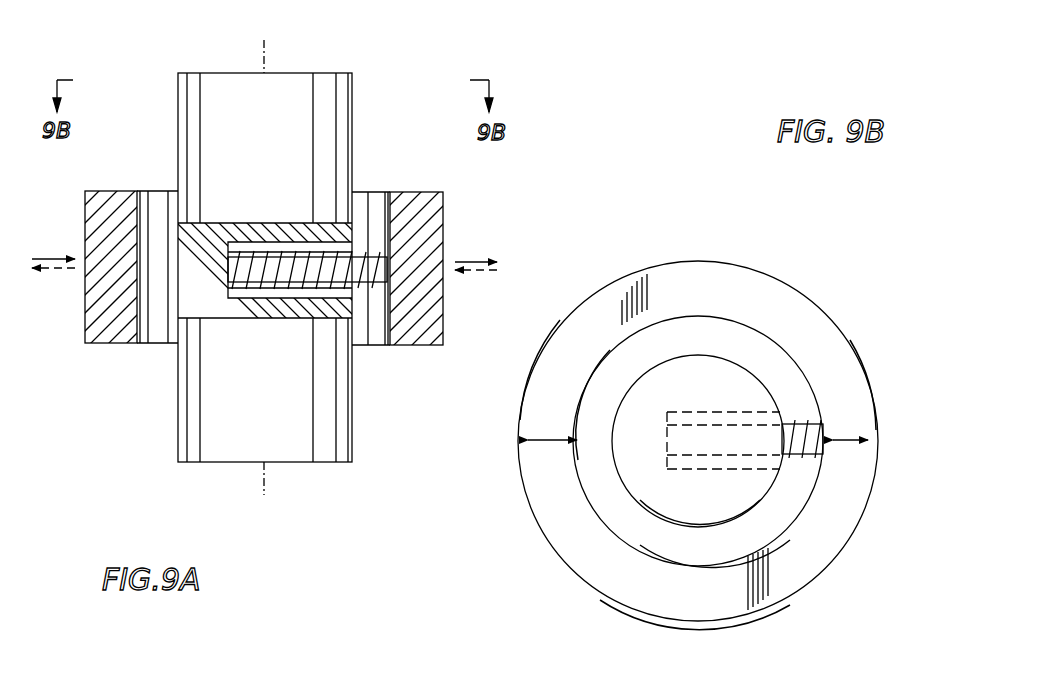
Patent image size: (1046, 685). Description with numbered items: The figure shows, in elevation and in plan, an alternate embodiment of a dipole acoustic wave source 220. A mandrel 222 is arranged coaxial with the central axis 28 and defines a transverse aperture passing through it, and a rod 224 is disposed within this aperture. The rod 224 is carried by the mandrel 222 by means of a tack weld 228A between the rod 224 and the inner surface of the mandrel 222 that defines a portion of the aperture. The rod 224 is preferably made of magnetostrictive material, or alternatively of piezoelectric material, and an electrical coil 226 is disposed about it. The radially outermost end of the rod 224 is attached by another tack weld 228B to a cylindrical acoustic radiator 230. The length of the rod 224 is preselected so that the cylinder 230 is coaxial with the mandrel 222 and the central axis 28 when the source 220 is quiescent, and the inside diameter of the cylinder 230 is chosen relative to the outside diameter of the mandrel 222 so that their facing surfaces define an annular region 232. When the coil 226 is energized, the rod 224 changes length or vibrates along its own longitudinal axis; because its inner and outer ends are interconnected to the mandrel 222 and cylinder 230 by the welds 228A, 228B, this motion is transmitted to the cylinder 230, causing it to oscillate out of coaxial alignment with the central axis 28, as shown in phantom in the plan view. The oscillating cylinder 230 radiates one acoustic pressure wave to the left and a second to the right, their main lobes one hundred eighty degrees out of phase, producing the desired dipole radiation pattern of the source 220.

In FIG. 9A, the central axis 28 is at (264, 40).
In FIG. 9A, the dipole acoustic wave source 220 is at (122, 416).
In FIG. 9B, the dipole acoustic wave source 220 is at (850, 263).
In FIG. 9A, the mandrel 222 is at (342, 78).
In FIG. 9B, the mandrel 222 is at (640, 497).
In FIG. 9A, the rod 224 is at (292, 283).
In FIG. 9A, the electrical coil 226 is at (310, 232).
In FIG. 9A, the tack weld 228A is at (215, 318).
In FIG. 9B, the tack weld 228A is at (668, 440).
In FIG. 9A, the tack weld 228B is at (392, 258).
In FIG. 9B, the tack weld 228B is at (822, 425).
In FIG. 9A, the cylindrical acoustic radiator 230 is at (435, 327).
In FIG. 9B, the cylindrical acoustic radiator 230 is at (815, 552).
In FIG. 9A, the annular region 232 is at (376, 205).